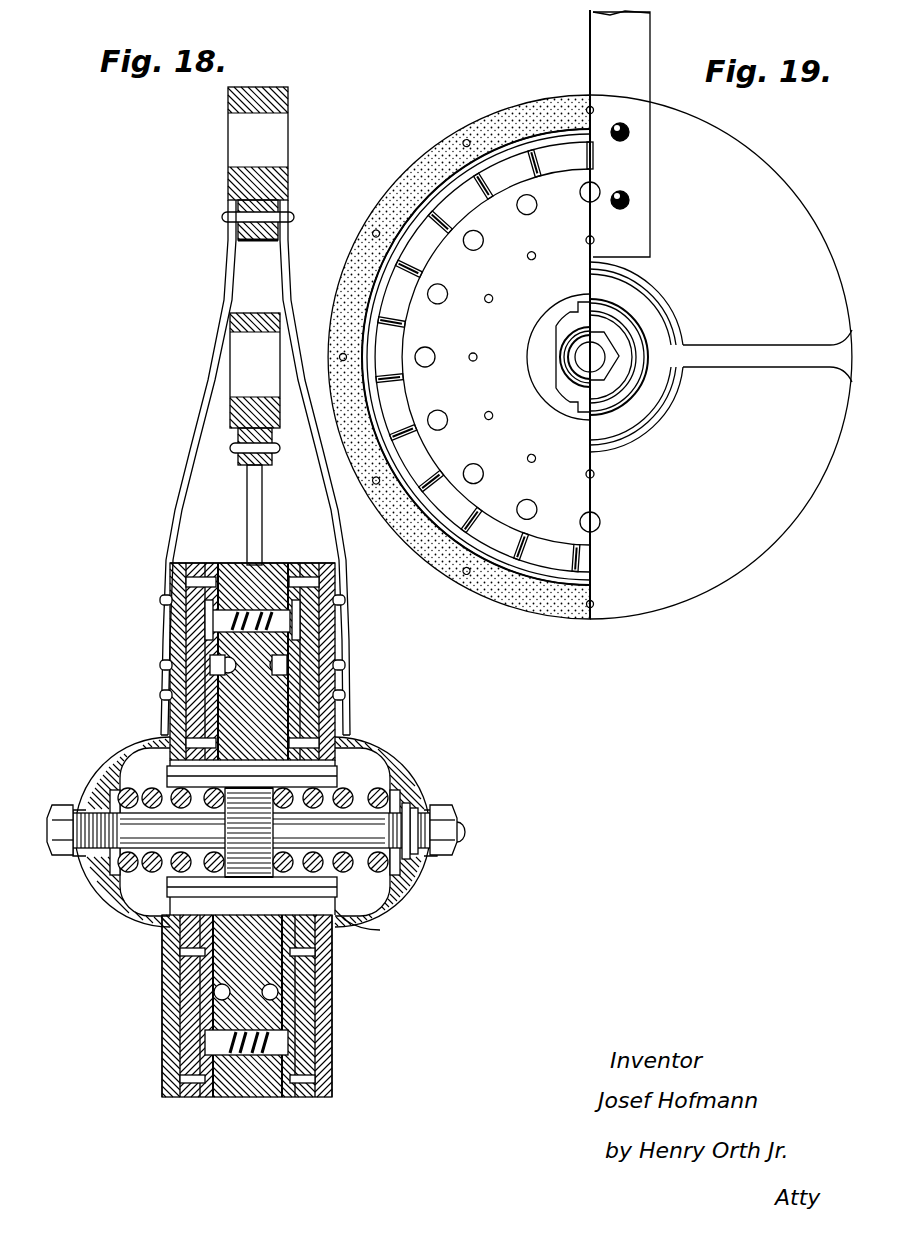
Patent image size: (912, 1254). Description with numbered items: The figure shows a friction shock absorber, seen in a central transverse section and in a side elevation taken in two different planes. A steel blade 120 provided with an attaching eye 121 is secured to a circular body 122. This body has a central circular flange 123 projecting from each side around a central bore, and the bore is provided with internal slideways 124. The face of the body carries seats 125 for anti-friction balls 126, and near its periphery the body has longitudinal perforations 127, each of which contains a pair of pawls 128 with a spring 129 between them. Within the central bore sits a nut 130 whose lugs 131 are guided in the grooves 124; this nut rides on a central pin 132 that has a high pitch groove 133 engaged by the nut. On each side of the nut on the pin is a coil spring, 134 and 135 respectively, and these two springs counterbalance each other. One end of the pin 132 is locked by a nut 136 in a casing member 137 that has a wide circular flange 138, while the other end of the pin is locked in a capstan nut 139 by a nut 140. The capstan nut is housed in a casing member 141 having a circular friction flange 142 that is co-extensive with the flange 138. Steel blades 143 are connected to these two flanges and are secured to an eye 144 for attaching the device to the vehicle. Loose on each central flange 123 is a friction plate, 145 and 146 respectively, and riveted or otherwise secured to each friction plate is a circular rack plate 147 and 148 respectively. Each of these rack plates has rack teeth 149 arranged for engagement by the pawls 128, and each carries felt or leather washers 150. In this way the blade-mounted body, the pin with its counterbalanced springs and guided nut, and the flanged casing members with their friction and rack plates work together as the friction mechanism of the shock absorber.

In FIG. 18, the steel blade 120 is at (262, 494).
In FIG. 18, the attaching eye 121 is at (255, 389).
In FIG. 18, the circular body 122 is at (265, 565).
In FIG. 18, the central circular flange 123 is at (160, 770).
In FIG. 19, the central circular flange 123 is at (545, 318).
In FIG. 18, the internal slideways 124 is at (345, 775).
In FIG. 19, the internal slideways 124 is at (580, 300).
In FIG. 18, the seats 125 is at (286, 668).
In FIG. 19, the seats 125 is at (446, 302).
In FIG. 18, the anti-friction balls 126 is at (292, 664).
In FIG. 18, the longitudinal perforations 127 is at (222, 565).
In FIG. 18, the pawls 128 is at (172, 605).
In FIG. 18, the spring 129 is at (282, 608).
In FIG. 18, the nut 130 is at (232, 860).
In FIG. 18, the lugs 131 is at (172, 740).
In FIG. 18, the central pin 132 is at (457, 830).
In FIG. 19, the central pin 132 is at (600, 365).
In FIG. 18, the high pitch groove 133 is at (120, 845).
In FIG. 18, the coil spring 134 is at (135, 785).
In FIG. 18, the coil spring 135 is at (392, 790).
In FIG. 18, the nut 136 is at (68, 805).
In FIG. 18, the casing member 137 is at (135, 868).
In FIG. 18, the wide circular flange 138 is at (172, 578).
In FIG. 18, the capstan nut 139 is at (440, 858).
In FIG. 19, the capstan nut 139 is at (630, 405).
In FIG. 18, the nut 140 is at (440, 808).
In FIG. 19, the nut 140 is at (622, 392).
In FIG. 18, the casing member 141 is at (395, 915).
In FIG. 19, the casing member 141 is at (640, 430).
In FIG. 18, the circular friction flange 142 is at (338, 585).
In FIG. 19, the circular friction flange 142 is at (697, 590).
In FIG. 18, the steel blades 143 is at (293, 279).
In FIG. 19, the steel blades 143 is at (640, 72).
In FIG. 18, the eye 144 is at (258, 143).
In FIG. 18, the friction plate 145 is at (205, 648).
In FIG. 18, the friction plate 146 is at (298, 640).
In FIG. 18, the circular rack plate 147 is at (172, 676).
In FIG. 18, the circular rack plate 148 is at (332, 690).
In FIG. 18, the rack teeth 149 is at (175, 625).
In FIG. 19, the rack teeth 149 is at (405, 465).
In FIG. 18, the felt or leather washers 150 is at (218, 566).